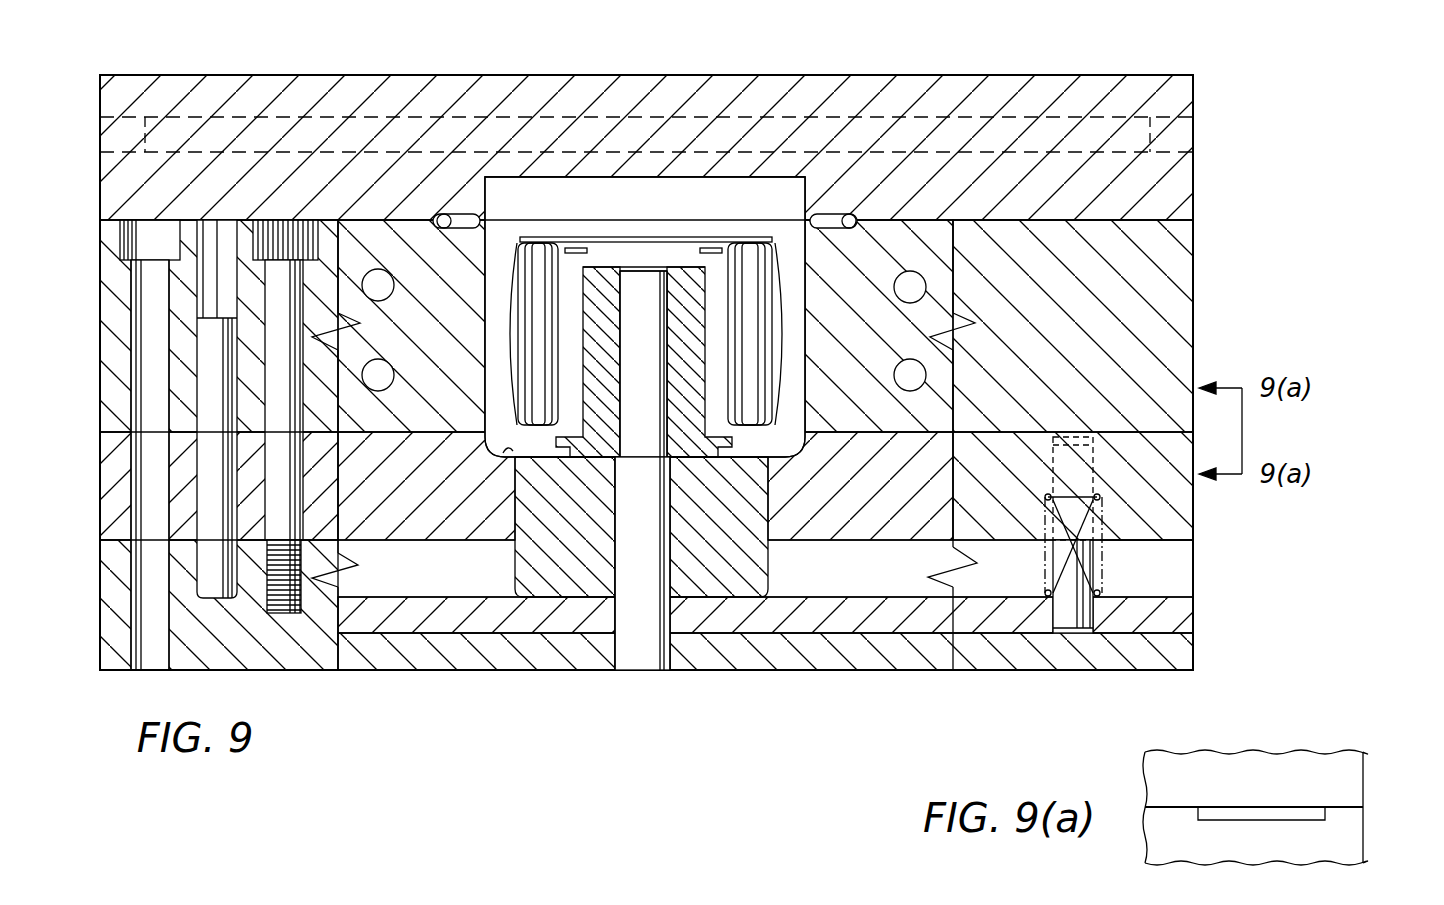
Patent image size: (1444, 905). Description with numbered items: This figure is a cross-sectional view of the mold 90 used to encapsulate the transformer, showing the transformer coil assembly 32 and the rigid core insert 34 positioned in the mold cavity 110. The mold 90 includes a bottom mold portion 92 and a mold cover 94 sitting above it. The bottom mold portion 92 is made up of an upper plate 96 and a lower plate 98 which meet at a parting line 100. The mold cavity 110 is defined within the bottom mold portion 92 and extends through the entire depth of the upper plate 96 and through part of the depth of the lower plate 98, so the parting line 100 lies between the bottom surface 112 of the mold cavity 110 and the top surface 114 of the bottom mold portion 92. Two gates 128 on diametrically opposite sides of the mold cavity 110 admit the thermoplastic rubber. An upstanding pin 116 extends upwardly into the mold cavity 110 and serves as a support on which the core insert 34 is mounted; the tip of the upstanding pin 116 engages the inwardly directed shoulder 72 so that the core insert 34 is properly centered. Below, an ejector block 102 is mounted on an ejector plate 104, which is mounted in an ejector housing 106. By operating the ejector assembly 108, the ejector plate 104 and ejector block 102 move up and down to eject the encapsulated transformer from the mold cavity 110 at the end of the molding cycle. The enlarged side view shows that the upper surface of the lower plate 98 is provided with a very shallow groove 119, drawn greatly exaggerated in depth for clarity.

In FIG. 9, the mold 90 is at (1212, 155).
In FIG. 9, the mold cover 94 is at (1194, 190).
In FIG. 9, the upper plate 96 is at (1194, 250).
In FIG. 9A, the upper plate 96 is at (1293, 770).
In FIG. 9, the bottom mold portion 92 is at (1194, 340).
In FIG. 9, the lower plate 98 is at (1188, 526).
In FIG. 9A, the lower plate 98 is at (1352, 836).
In FIG. 9, the parting line 100 is at (1194, 472).
In FIG. 9, the ejector block 102 is at (719, 577).
In FIG. 9, the ejector plate 104 is at (832, 625).
In FIG. 9, the ejector housing 106 is at (989, 658).
In FIG. 9, the ejector assembly 108 is at (1102, 577).
In FIG. 9, the mold cavity 110 is at (500, 240).
In FIG. 9, the bottom surface 112 is at (503, 455).
In FIG. 9, the top surface 114 is at (758, 221).
In FIG. 9, the upstanding pin 116 is at (627, 655).
In FIG. 9A, the groove 119 is at (1300, 817).
In FIG. 9, the gates 128 is at (457, 222).
In FIG. 9, the transformer coil assembly 32 is at (690, 248).
In FIG. 9, the rigid core insert 34 is at (603, 268).
In FIG. 9, the inwardly directed shoulder 72 is at (652, 262).